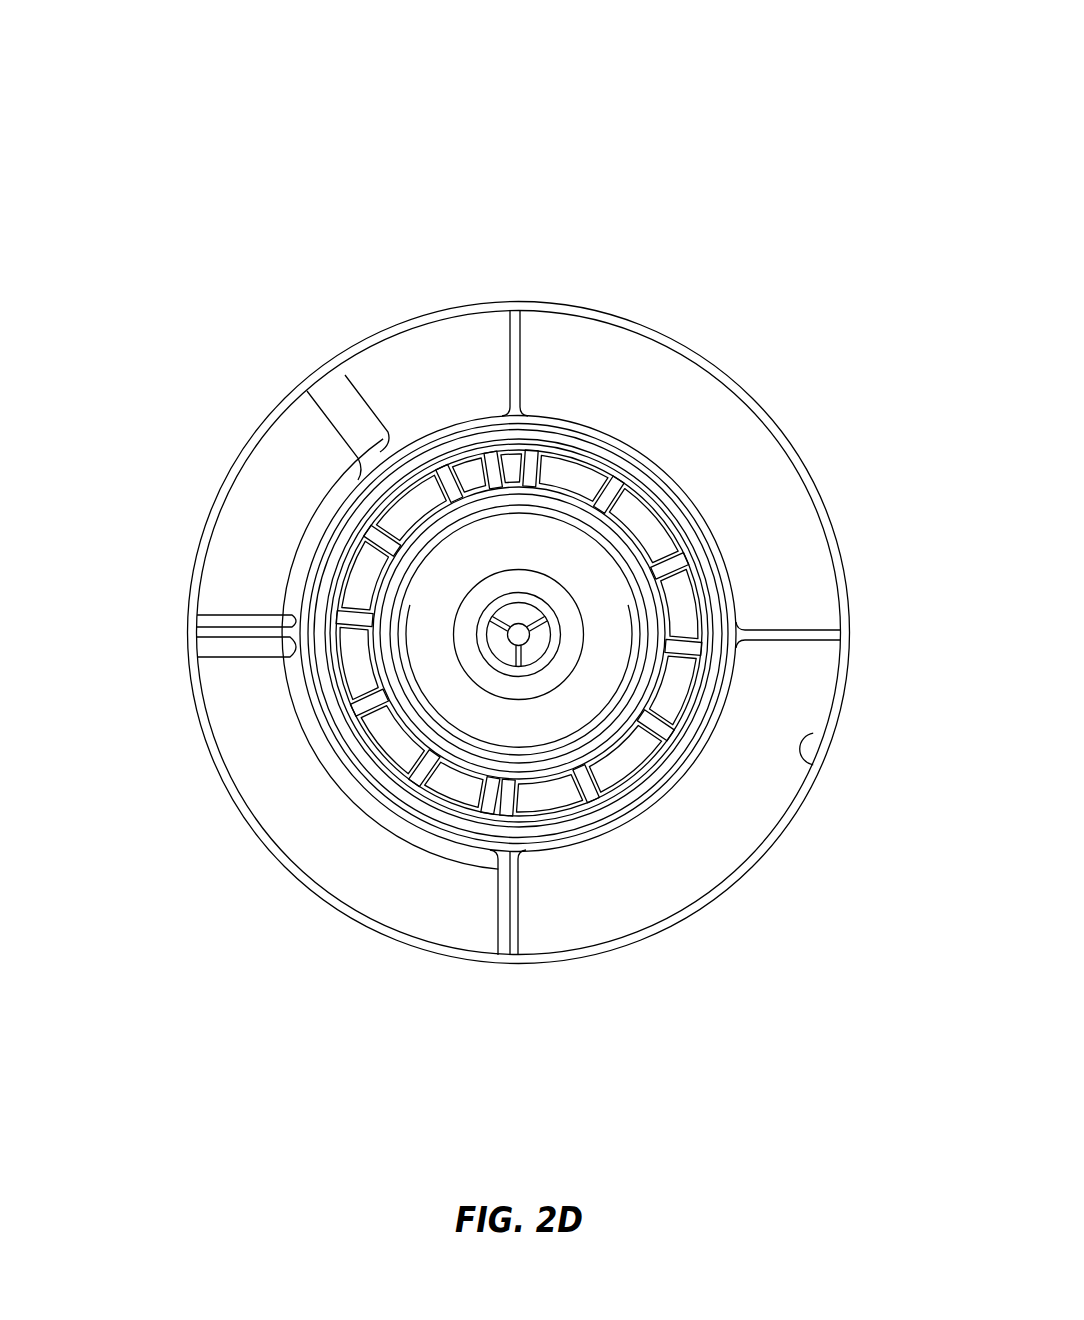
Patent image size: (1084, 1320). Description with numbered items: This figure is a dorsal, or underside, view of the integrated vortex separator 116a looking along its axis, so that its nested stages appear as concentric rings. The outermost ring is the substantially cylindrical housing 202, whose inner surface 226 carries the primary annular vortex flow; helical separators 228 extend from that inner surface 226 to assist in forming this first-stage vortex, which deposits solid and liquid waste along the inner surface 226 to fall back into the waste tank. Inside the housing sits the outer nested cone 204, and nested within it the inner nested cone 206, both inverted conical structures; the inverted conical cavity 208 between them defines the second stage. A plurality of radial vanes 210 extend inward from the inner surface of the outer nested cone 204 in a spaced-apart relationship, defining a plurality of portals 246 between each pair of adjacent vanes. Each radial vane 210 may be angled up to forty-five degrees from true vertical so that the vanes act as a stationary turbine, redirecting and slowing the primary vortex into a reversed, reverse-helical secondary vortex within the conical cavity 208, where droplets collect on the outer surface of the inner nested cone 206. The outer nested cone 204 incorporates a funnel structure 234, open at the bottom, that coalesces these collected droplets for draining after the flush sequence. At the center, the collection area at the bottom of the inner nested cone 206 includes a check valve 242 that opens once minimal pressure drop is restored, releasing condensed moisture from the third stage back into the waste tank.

The integrated vortex separator 116a is at (150, 72).
The housing 202 is at (430, 312).
The outer nested cone 204 is at (426, 790).
The inner nested cone 206 is at (652, 634).
The conical cavity 208 is at (642, 525).
The radial vanes 210 is at (592, 770).
The inner surface 226 is at (800, 752).
The helical separators 228 is at (248, 716).
The funnel structure 234 is at (490, 548).
The check valve 242 is at (518, 613).
The portals 246 is at (626, 768).